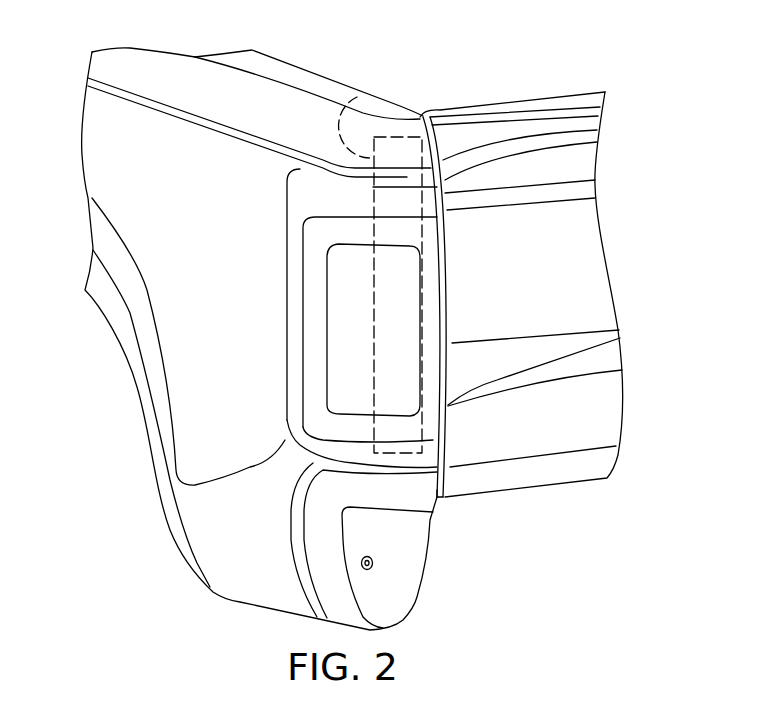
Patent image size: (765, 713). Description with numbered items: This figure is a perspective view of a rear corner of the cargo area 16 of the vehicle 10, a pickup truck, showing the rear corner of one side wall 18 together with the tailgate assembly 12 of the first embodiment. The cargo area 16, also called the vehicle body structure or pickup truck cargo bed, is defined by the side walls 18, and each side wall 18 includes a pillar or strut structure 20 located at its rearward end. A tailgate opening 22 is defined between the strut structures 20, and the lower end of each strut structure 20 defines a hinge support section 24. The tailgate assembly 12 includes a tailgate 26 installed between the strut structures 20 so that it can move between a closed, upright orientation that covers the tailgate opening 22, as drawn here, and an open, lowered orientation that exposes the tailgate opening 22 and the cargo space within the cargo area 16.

The vehicle 10 is at (536, 61).
The tailgate assembly 12 is at (455, 97).
The cargo area 16 is at (313, 68).
The side wall 18 is at (176, 82).
The strut structure 20 is at (361, 92).
The tailgate opening 22 is at (447, 302).
The hinge support section 24 is at (444, 508).
The tailgate 26 is at (567, 258).